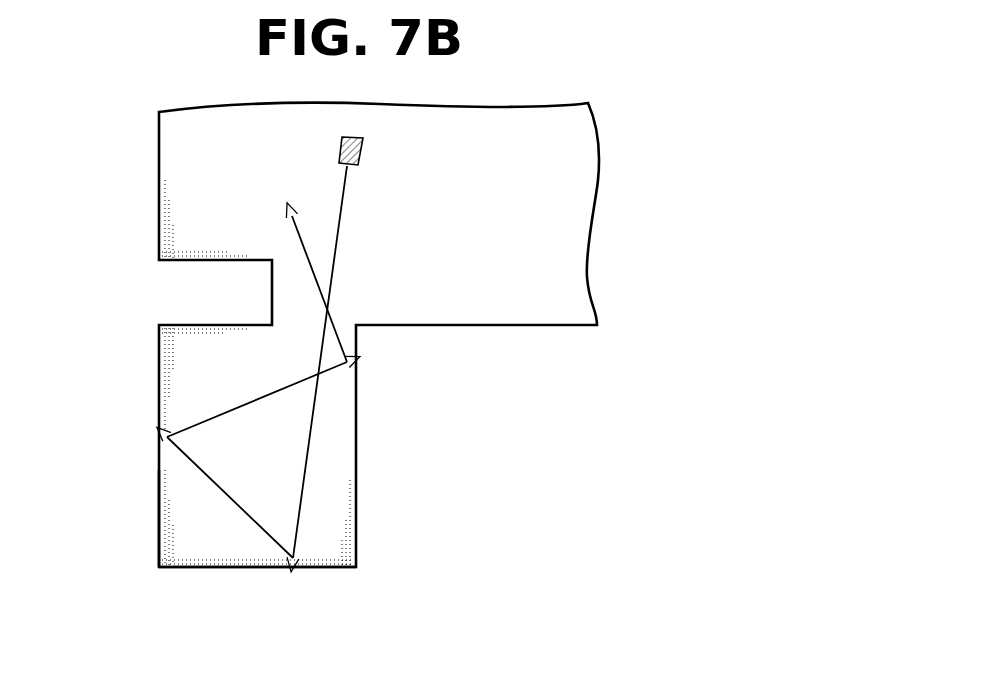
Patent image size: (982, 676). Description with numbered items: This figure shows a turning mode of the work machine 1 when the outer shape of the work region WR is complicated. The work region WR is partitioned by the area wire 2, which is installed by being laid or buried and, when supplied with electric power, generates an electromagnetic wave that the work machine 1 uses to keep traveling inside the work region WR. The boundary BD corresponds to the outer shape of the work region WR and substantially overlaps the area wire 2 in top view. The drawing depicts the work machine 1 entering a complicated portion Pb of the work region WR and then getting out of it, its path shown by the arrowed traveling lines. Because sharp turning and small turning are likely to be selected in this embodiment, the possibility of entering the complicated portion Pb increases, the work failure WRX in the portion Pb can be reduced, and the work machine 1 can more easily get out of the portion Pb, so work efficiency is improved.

The work machine 1 is at (341, 150).
The area wire 2 is at (159, 568).
The work region WR is at (567, 188).
The work failure WRX is at (171, 248).
The complicated portion Pb is at (396, 502).
The boundary BD is at (232, 570).